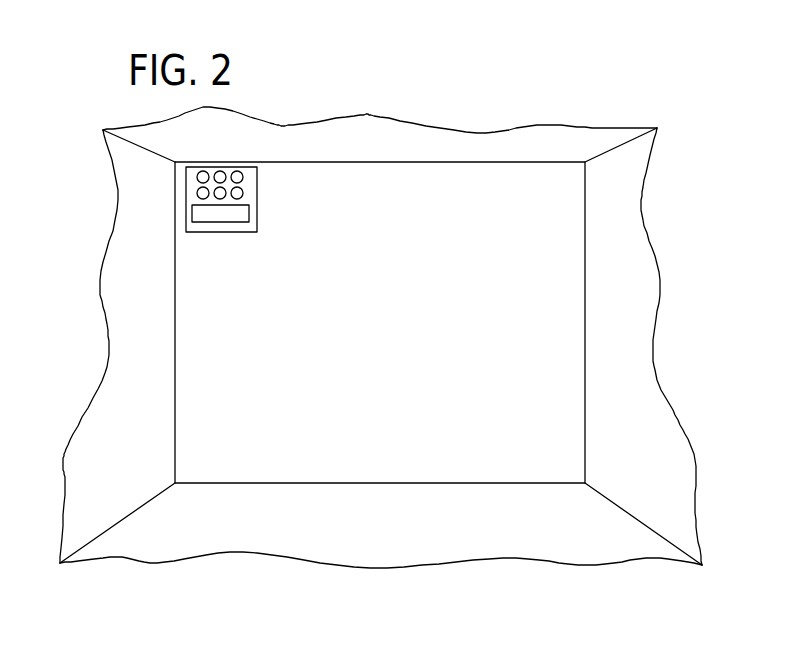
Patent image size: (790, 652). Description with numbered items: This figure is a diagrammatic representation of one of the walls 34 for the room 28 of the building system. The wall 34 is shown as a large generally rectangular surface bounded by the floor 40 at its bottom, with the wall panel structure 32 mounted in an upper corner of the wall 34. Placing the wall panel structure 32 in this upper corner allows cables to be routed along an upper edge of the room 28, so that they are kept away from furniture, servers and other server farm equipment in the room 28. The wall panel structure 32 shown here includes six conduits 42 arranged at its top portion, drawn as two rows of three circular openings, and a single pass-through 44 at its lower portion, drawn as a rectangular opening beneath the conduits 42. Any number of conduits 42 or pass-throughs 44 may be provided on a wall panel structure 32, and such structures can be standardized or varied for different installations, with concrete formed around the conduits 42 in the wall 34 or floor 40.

The room 28 is at (569, 88).
The wall panel structure 32 is at (272, 207).
The wall 34 is at (477, 183).
The floor 40 is at (412, 545).
The conduits 42 is at (205, 172).
The pass-through 44 is at (227, 222).